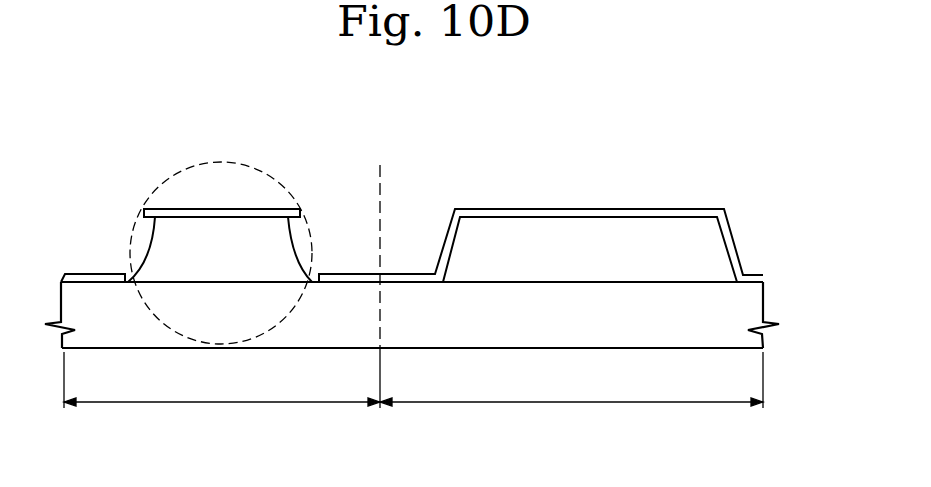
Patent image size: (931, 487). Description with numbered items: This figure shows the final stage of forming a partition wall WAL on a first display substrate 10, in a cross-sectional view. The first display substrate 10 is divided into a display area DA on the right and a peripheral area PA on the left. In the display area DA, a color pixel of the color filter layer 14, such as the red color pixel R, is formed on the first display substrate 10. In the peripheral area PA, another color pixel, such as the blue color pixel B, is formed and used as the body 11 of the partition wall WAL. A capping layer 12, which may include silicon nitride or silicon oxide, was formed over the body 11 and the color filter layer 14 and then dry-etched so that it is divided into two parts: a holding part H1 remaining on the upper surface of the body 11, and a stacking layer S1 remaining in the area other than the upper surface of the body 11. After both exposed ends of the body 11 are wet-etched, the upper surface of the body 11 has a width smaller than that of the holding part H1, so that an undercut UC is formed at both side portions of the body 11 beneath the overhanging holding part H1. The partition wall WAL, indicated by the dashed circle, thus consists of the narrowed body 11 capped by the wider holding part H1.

The first display substrate 10 is at (745, 308).
The body 11 is at (251, 228).
The capping layer 12 is at (186, 184).
The color filter layer 14 is at (541, 214).
The stacking layer S1 is at (100, 274).
The holding part H1 is at (220, 202).
The partition wall WAL is at (240, 162).
The undercut UC is at (308, 253).
The blue color pixel B is at (220, 249).
The red color pixel R is at (590, 249).
The peripheral area PA is at (222, 389).
The display area DA is at (571, 389).